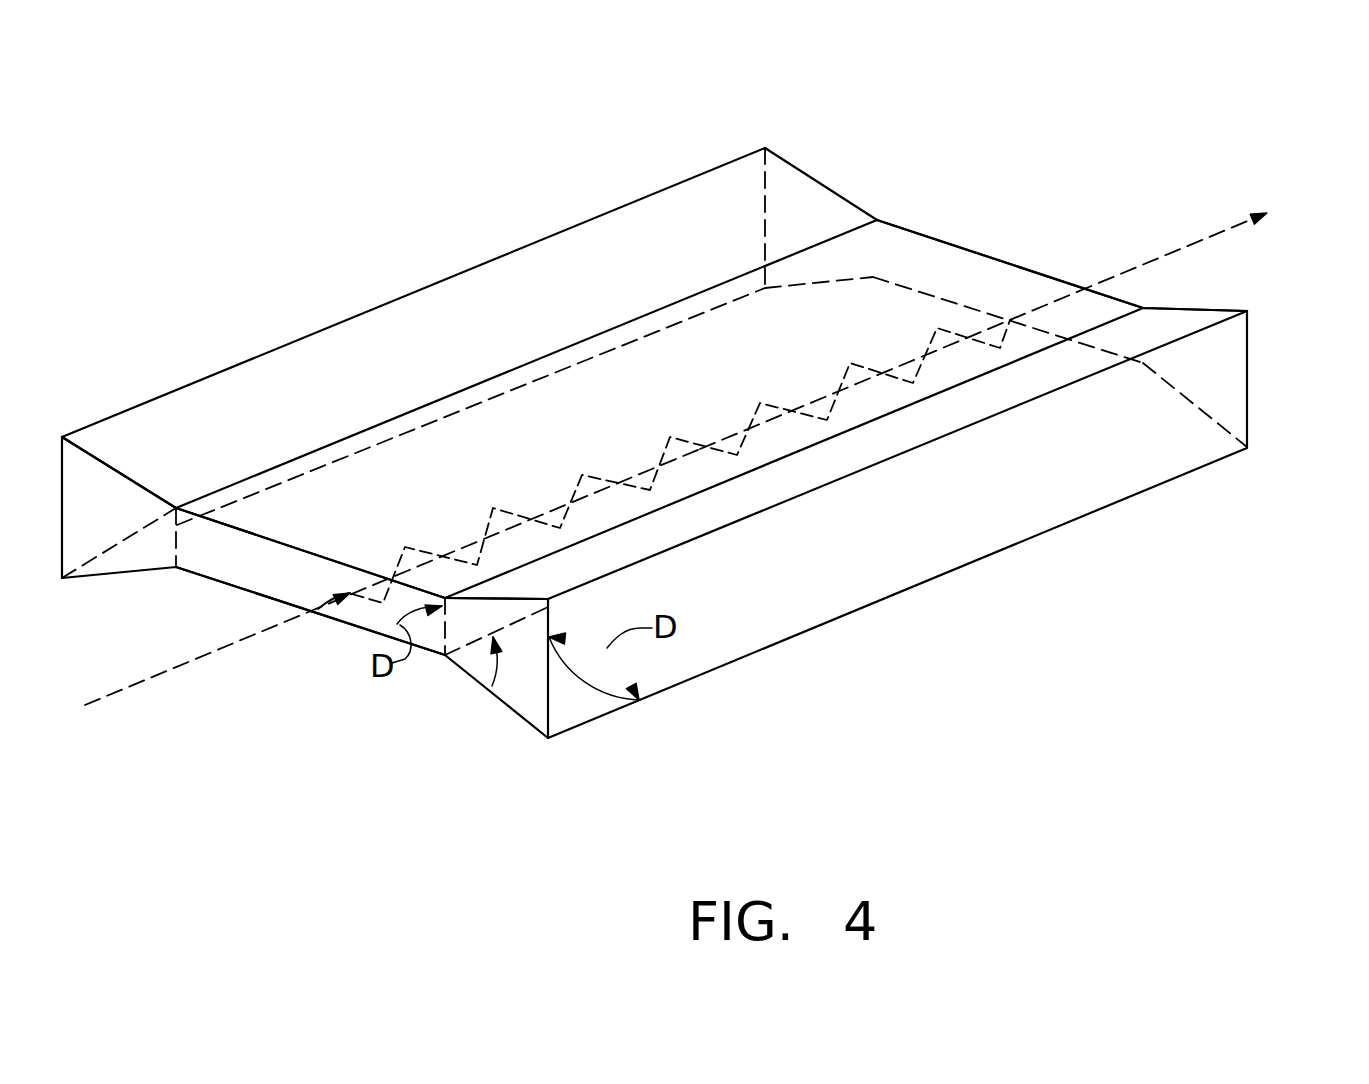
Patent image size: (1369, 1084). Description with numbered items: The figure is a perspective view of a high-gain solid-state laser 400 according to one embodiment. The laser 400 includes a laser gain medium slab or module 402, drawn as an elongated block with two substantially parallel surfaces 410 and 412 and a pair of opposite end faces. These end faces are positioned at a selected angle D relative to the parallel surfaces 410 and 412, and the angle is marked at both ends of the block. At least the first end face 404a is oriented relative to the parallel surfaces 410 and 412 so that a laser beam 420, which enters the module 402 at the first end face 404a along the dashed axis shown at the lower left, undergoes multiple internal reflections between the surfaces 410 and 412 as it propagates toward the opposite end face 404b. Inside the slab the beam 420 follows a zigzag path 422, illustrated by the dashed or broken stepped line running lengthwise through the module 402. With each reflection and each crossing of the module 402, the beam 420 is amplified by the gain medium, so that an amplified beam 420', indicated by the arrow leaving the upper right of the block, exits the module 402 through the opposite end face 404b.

The high-gain solid-state laser 400 is at (958, 137).
The LGM slab or module 402 is at (913, 232).
The first end face 404a is at (300, 580).
The opposite end face 404b is at (927, 295).
The parallel surface 410 is at (337, 617).
The parallel surface 412 is at (535, 480).
The laser beam 420 is at (392, 601).
The amplified beam 420' is at (1026, 331).
The zigzag path 422 is at (593, 468).